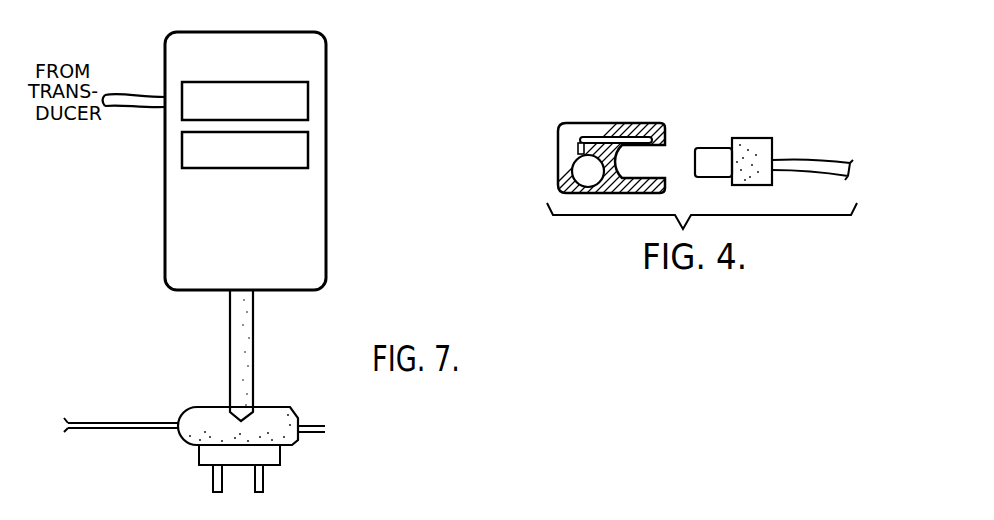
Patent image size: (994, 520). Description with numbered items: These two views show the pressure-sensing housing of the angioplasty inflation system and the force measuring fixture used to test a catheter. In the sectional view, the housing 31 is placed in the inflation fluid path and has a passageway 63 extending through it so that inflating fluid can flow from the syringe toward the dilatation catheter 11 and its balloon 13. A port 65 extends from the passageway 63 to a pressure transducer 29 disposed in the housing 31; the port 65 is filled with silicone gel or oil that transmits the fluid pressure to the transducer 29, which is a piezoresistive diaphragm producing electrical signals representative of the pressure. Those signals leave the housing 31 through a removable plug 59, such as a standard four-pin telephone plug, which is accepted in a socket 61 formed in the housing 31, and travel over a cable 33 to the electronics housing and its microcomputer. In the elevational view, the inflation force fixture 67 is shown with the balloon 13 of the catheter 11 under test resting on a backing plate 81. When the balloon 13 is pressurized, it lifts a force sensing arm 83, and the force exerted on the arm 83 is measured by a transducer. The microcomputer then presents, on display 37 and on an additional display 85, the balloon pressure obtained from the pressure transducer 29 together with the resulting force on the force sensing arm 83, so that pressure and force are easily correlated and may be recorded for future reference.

In FIG. 7, the dilatation catheter 11 is at (121, 423).
In FIG. 7, the balloon 13 is at (286, 407).
In FIG. 7, the pressure transducer 29 is at (141, 108).
In FIG. 4, the pressure transducer 29 is at (630, 123).
In FIG. 4, the housing 31 is at (596, 81).
In FIG. 4, the cable 33 is at (833, 157).
In FIG. 7, the display 37 is at (308, 100).
In FIG. 4, the removable plug 59 is at (769, 138).
In FIG. 4, the socket 61 is at (660, 162).
In FIG. 4, the passageway 63 is at (572, 178).
In FIG. 4, the port 65 is at (578, 152).
In FIG. 7, the inflation force fixture 67 is at (326, 218).
In FIG. 7, the backing plate 81 is at (282, 458).
In FIG. 7, the force sensing arm 83 is at (253, 338).
In FIG. 7, the additional display 85 is at (308, 146).